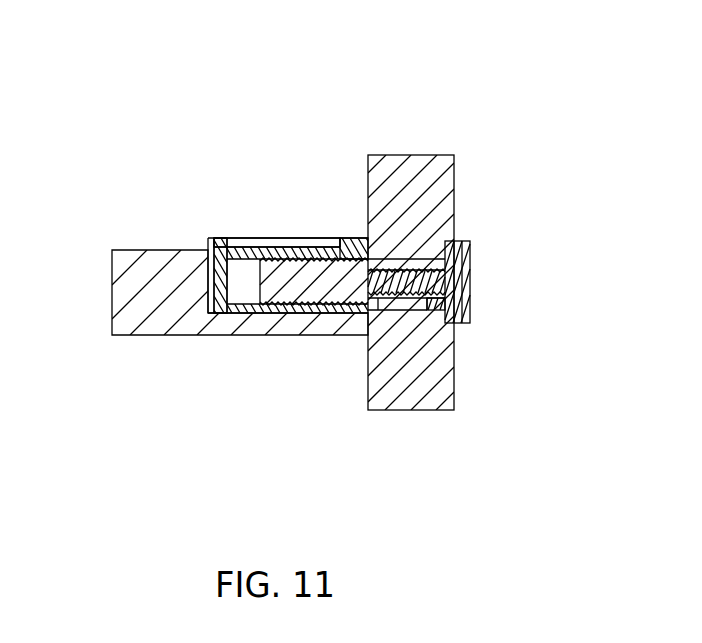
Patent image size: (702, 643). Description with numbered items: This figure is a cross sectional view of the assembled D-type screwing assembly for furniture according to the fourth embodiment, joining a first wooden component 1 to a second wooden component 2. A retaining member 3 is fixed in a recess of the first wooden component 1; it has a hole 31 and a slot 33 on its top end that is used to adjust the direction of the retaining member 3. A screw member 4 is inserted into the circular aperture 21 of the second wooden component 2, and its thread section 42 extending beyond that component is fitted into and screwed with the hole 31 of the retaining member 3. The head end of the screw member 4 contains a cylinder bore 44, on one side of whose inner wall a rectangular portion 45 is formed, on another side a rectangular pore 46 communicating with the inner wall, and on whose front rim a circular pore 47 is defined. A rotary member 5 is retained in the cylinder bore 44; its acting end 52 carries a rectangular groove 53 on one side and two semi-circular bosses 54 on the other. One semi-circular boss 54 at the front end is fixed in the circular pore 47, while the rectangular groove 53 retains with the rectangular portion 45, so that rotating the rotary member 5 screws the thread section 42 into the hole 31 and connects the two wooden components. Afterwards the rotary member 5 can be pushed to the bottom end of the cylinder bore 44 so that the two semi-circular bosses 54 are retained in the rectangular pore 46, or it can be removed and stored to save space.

The first wooden component 1 is at (165, 320).
The second wooden component 2 is at (415, 170).
The retaining member 3 is at (220, 297).
The hole 31 is at (233, 280).
The slot 33 is at (240, 245).
The screw member 4 is at (227, 95).
The thread section 42 is at (304, 262).
The cylinder bore 44 is at (412, 262).
The rectangular portion 45 is at (355, 186).
The rectangular groove 53 is at (406, 282).
The circular aperture 21 is at (398, 258).
The rotary member 5 is at (472, 279).
The circular pore 47 is at (468, 275).
The rectangular pore 46 is at (393, 303).
The acting end 52 is at (408, 305).
The semi-circular bosses 54 is at (376, 306).